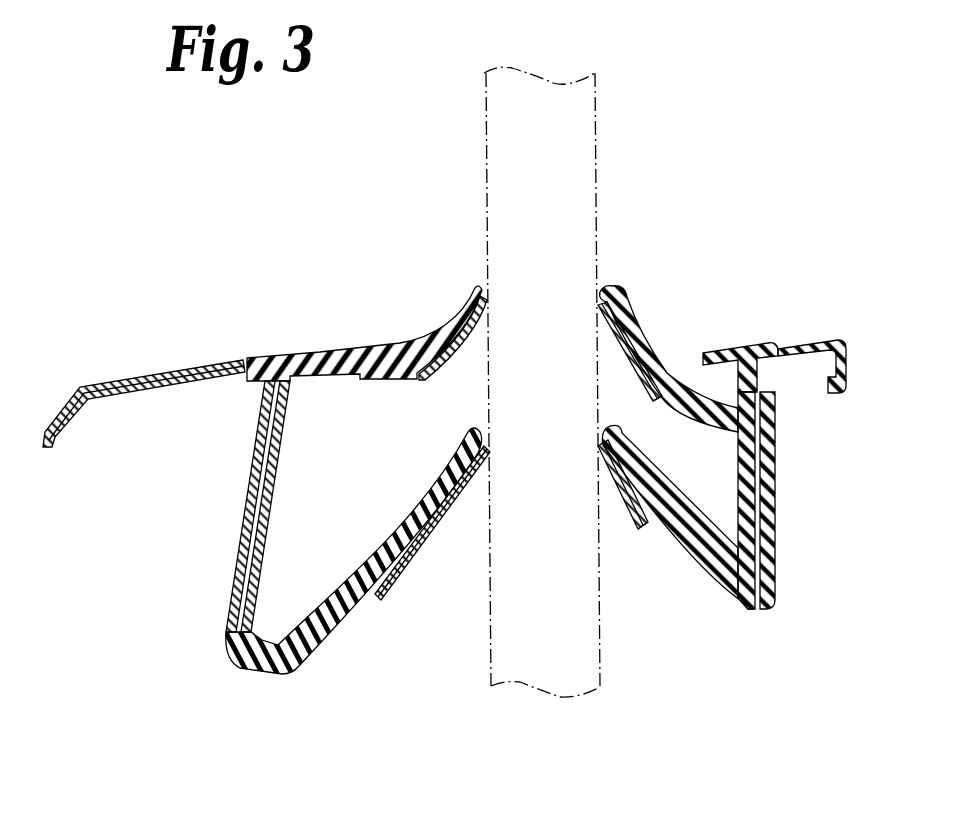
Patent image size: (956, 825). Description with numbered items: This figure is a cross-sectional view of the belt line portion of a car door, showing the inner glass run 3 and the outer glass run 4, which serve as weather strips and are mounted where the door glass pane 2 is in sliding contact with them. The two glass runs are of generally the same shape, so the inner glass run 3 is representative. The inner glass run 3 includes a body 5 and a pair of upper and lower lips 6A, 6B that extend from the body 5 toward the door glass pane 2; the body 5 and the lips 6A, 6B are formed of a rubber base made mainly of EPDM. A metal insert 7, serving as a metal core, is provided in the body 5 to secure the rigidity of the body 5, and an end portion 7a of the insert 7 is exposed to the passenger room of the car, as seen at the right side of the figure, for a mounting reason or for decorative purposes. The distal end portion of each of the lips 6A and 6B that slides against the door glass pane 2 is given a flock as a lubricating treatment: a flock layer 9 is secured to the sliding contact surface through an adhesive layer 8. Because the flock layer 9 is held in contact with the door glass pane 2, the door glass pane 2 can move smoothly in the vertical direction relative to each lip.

The door glass pane 2 is at (487, 190).
The inner glass run 3 is at (722, 439).
The outer glass run 4 is at (358, 344).
The body 5 is at (777, 497).
The upper lip 6A is at (633, 322).
The lower lip 6B is at (730, 541).
The metal insert 7 is at (777, 439).
The end portion of the insert 7a is at (825, 343).
The adhesive layer 8 is at (661, 400).
The flock layer 9 is at (634, 374).